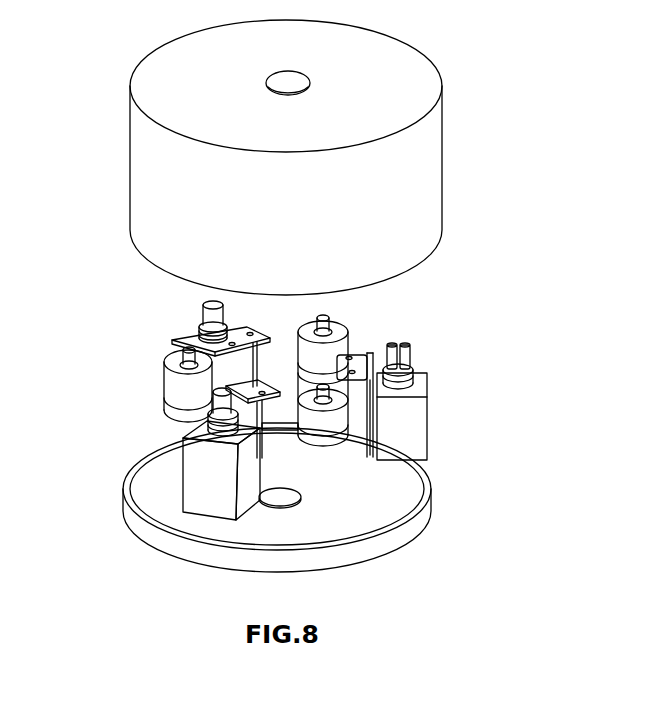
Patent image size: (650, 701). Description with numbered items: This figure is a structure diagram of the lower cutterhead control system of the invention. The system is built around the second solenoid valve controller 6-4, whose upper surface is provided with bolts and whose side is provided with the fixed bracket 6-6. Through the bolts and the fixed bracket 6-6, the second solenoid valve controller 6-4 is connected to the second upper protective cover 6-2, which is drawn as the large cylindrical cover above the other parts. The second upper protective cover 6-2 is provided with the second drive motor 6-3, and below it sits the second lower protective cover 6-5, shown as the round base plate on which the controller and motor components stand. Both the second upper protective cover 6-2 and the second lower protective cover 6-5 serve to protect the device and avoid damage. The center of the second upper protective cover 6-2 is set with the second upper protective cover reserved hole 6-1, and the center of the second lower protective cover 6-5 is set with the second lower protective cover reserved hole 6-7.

The second upper protective cover reserved hole 6-1 is at (266, 80).
The second upper protective cover 6-2 is at (160, 180).
The second drive motor 6-3 is at (185, 393).
The second solenoid valve controller 6-4 is at (208, 470).
The second lower protective cover 6-5 is at (208, 530).
The fixed bracket 6-6 is at (352, 357).
The second lower protective cover reserved hole 6-7 is at (278, 500).